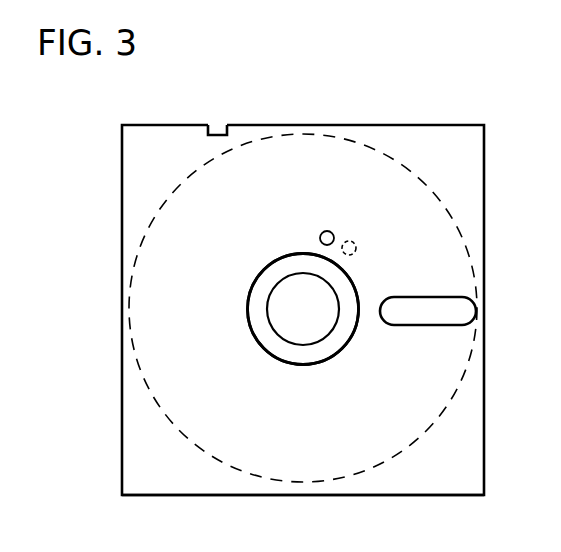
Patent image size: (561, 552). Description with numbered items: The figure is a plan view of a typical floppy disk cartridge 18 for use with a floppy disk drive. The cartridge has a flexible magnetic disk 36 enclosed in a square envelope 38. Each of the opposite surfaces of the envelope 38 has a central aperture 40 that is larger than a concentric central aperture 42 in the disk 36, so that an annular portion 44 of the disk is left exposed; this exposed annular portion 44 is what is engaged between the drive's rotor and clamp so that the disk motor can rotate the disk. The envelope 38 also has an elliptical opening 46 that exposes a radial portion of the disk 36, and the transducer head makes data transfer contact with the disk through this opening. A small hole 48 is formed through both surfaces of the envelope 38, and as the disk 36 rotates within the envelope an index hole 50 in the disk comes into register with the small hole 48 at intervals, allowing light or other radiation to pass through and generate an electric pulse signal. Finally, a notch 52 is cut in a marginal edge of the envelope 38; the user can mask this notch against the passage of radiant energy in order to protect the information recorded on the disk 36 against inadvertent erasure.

The floppy disk cartridge 18 is at (487, 194).
The flexible magnetic disk 36 is at (436, 430).
The square envelope 38 is at (456, 497).
The central aperture 40 is at (303, 358).
The central aperture 42 is at (276, 301).
The annular portion 44 is at (262, 331).
The elliptical opening 46 is at (420, 303).
The small hole 48 is at (326, 231).
The index hole 50 is at (356, 245).
The notch 52 is at (215, 125).